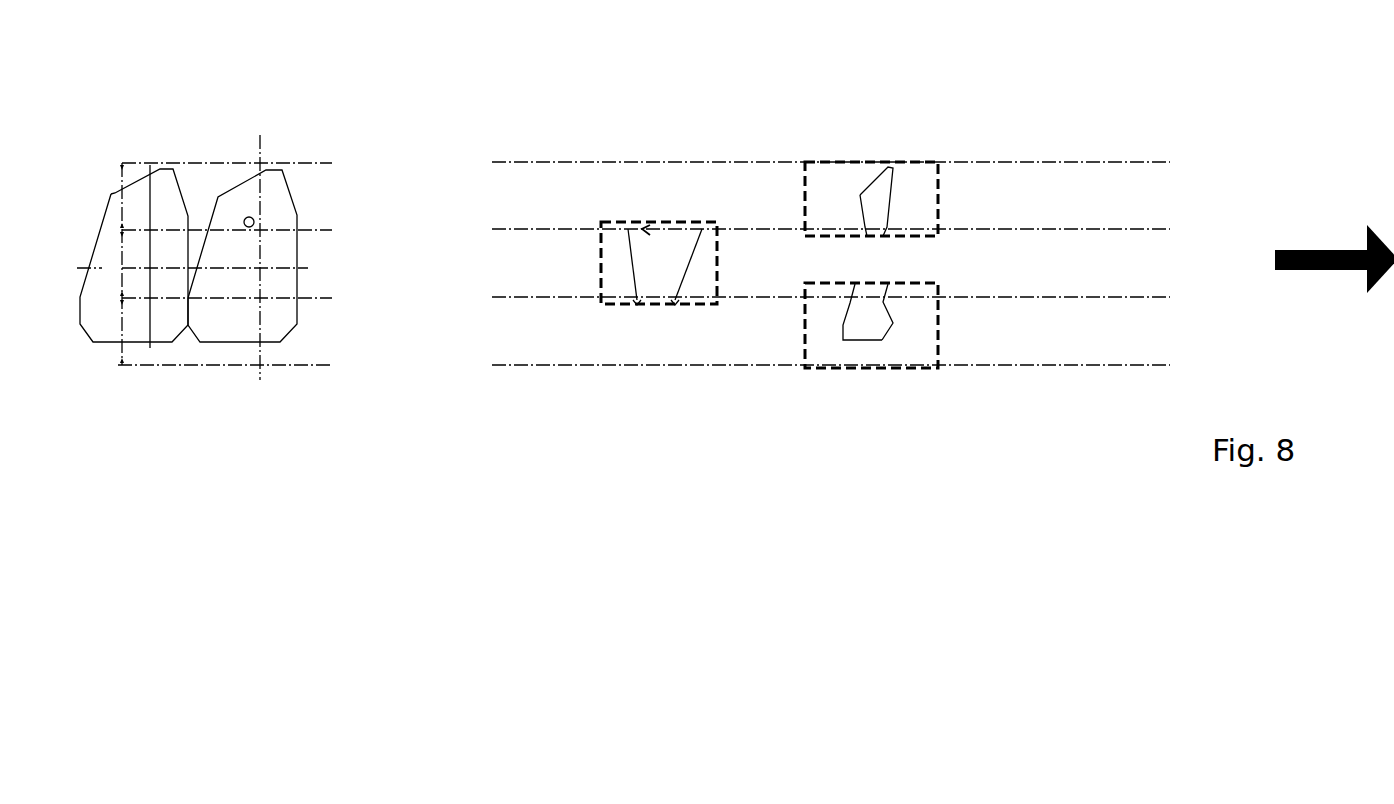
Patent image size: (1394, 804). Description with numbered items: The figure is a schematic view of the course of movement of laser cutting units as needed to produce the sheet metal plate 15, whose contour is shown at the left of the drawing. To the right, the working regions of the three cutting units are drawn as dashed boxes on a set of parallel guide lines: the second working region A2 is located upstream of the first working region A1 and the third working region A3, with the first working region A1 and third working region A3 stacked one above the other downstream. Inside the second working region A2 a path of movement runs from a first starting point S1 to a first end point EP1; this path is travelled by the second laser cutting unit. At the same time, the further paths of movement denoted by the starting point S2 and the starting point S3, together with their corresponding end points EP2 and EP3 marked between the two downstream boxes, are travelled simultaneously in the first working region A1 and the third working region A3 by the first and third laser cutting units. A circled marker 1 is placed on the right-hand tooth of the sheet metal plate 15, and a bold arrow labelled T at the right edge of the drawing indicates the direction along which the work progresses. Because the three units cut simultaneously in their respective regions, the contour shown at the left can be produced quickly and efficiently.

The sheet metal plate 15 is at (273, 197).
The marker 1 is at (249, 222).
The second working region A2 is at (615, 280).
The third working region A3 is at (911, 212).
The first working region A1 is at (911, 311).
The first end point EP1 is at (616, 283).
The first starting point S1 is at (688, 283).
The end point EP2 is at (847, 229).
The starting point S2 is at (888, 215).
The end point EP3 is at (851, 297).
The starting point S3 is at (897, 297).
The feed direction T is at (1334, 233).